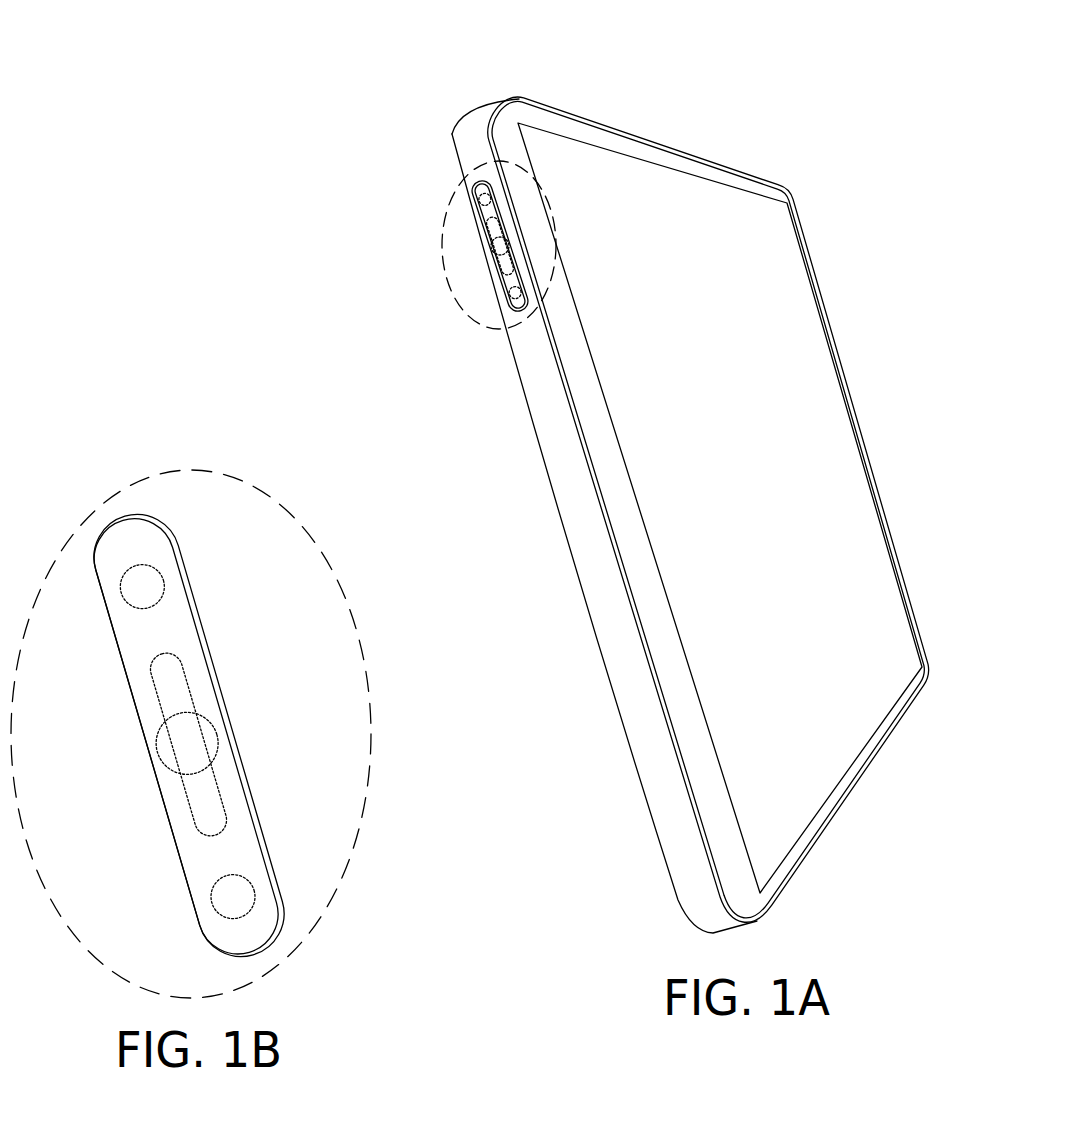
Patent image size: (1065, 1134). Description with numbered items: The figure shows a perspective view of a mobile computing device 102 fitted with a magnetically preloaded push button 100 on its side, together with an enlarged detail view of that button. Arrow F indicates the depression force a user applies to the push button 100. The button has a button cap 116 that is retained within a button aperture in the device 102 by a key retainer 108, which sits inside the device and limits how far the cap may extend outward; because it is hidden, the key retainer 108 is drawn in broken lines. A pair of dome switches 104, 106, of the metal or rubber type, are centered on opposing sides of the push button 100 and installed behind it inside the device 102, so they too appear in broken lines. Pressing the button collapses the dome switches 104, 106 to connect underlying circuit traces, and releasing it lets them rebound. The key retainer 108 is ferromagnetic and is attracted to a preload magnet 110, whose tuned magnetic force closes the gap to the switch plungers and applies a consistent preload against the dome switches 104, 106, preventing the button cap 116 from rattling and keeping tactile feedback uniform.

In FIG. 1A, the magnetically preloaded push button 100 is at (657, 471).
In FIG. 1B, the magnetically preloaded push button 100 is at (192, 735).
In FIG. 1A, the mobile computing device 102 is at (554, 74).
In FIG. 1B, the dome switch 104 is at (142, 586).
In FIG. 1B, the dome switch 106 is at (186, 736).
In FIG. 1B, the key retainer 108 is at (189, 744).
In FIG. 1B, the preload magnet 110 is at (187, 743).
In FIG. 1B, the button cap 116 is at (134, 645).
In FIG. 1A, the depression force F is at (472, 253).